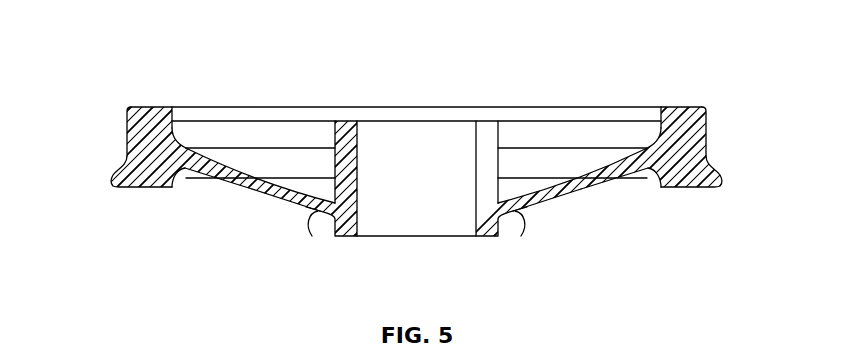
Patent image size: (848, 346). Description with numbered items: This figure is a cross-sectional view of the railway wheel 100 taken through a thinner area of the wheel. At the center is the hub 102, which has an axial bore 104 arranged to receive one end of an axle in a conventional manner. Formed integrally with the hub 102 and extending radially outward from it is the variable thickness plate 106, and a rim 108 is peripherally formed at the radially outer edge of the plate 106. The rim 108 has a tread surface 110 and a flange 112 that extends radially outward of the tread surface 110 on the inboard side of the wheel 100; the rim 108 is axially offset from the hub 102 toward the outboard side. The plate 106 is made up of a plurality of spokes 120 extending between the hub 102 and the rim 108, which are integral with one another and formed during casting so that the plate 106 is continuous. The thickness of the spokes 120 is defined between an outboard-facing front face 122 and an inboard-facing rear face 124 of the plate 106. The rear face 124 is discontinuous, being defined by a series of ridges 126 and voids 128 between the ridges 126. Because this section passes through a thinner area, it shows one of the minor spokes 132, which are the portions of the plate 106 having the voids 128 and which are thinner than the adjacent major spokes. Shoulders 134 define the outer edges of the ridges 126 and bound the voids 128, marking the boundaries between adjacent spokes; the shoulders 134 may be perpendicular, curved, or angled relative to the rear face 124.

The railway wheel 100 is at (138, 48).
The hub 102 is at (332, 126).
The axial bore 104 is at (402, 138).
The plate 106 is at (593, 172).
The rim 108 is at (706, 110).
The tread surface 110 is at (708, 140).
The flange 112 is at (723, 177).
The spokes 120 is at (273, 166).
The front face 122 is at (530, 92).
The rear face 124 is at (582, 224).
The ridges 126 is at (306, 214).
The voids 128 is at (289, 208).
The minor spokes 132 is at (245, 192).
The shoulders 134 is at (320, 216).